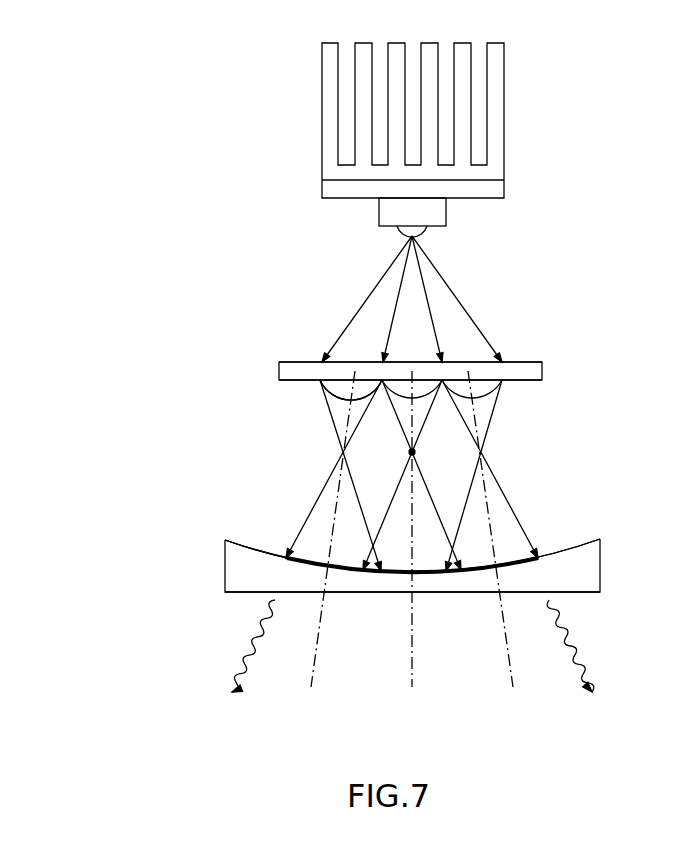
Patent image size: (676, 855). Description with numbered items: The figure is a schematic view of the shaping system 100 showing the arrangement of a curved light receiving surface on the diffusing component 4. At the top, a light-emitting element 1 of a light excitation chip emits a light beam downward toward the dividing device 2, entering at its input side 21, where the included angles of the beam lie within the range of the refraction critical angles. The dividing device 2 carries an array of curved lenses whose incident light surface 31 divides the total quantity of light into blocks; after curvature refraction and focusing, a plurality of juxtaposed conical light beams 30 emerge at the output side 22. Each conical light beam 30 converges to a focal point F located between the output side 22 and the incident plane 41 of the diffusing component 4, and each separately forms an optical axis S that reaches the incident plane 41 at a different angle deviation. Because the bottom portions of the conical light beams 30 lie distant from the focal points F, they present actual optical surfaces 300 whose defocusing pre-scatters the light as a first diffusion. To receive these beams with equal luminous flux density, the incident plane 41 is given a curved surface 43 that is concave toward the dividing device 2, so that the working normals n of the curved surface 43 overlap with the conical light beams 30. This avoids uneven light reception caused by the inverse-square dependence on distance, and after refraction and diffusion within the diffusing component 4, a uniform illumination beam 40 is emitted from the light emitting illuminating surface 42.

The shaping system 100 is at (547, 237).
The light-emitting element 1 is at (397, 212).
The dividing device 2 is at (519, 373).
The input side 21 is at (293, 357).
The output side 22 is at (510, 395).
The incident light surface 31 is at (355, 360).
The optical axis S is at (348, 418).
The conical light beam 30 is at (328, 482).
The focal point F is at (421, 452).
The working normal n is at (414, 540).
The diffusing component 4 is at (240, 566).
The incident plane 41 is at (263, 533).
The curved surface 43 is at (252, 548).
The light emitting illuminating surface 42 is at (262, 593).
The actual optical surface 300 is at (333, 570).
The illumination beam 40 is at (248, 660).